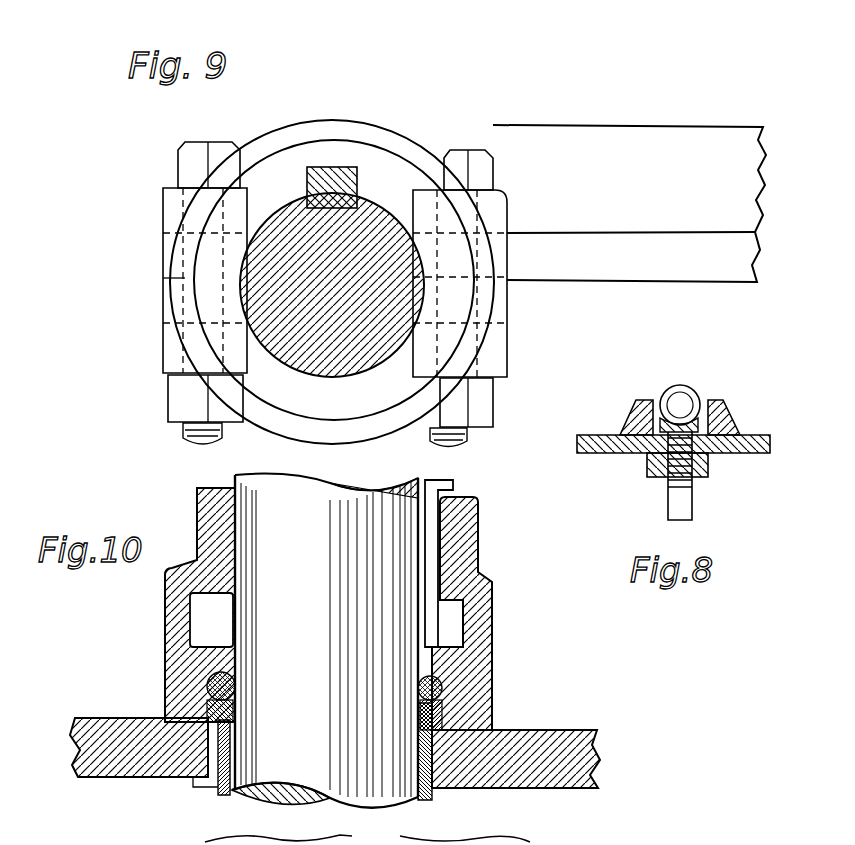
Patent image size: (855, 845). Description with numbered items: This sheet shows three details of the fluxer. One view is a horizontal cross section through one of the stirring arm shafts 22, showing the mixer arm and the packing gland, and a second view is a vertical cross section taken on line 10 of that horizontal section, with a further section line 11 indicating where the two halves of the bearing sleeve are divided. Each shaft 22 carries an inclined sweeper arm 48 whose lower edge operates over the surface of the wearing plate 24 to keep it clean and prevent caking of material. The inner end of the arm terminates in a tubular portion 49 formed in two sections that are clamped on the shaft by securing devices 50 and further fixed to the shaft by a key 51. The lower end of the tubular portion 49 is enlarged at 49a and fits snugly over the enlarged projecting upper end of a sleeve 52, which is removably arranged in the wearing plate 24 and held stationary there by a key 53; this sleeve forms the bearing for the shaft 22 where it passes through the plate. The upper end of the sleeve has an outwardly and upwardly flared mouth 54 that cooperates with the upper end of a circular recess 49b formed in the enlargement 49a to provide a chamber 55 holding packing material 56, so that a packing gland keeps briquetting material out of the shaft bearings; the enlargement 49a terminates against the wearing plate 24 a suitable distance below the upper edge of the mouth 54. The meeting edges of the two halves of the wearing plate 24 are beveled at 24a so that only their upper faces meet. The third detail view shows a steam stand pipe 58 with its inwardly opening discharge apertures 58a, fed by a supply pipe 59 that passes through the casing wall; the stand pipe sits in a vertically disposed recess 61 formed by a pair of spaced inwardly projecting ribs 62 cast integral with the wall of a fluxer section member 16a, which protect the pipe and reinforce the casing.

In FIG. 9, the section line 10— 10 is at (332, 455).
In FIG. 10, the section line 11— 11 is at (418, 696).
In FIG. 8, the fluxer section member 16a is at (745, 460).
In FIG. 9, the shaft 22 is at (272, 300).
In FIG. 10, the shaft 22 is at (325, 641).
In FIG. 10, the wearing plate 24 is at (80, 778).
In FIG. 10, the beveled meeting edges 24a is at (367, 827).
In FIG. 9, the sweeper arm 48 is at (700, 138).
In FIG. 9, the tubular portion 49 is at (238, 213).
In FIG. 10, the tubular portion 49 is at (480, 537).
In FIG. 9, the enlargement 49a is at (495, 338).
In FIG. 10, the enlargement 49a is at (480, 643).
In FIG. 10, the circular recess 49b is at (215, 680).
In FIG. 9, the clamp bolts 50 is at (178, 400).
In FIG. 9, the key 51 is at (318, 180).
In FIG. 10, the key 51 is at (430, 568).
In FIG. 10, the sleeve 52 is at (445, 750).
In FIG. 10, the key 53 is at (193, 790).
In FIG. 10, the flared mouth 54 is at (440, 688).
In FIG. 10, the chamber 55 is at (430, 690).
In FIG. 10, the packing material 56 is at (463, 650).
In FIG. 8, the stand pipe 58 is at (698, 395).
In FIG. 8, the discharge apertures 58a is at (672, 392).
In FIG. 8, the supply pipe 59 is at (666, 494).
In FIG. 8, the recess 61 is at (640, 460).
In FIG. 8, the ribs 62 is at (628, 412).